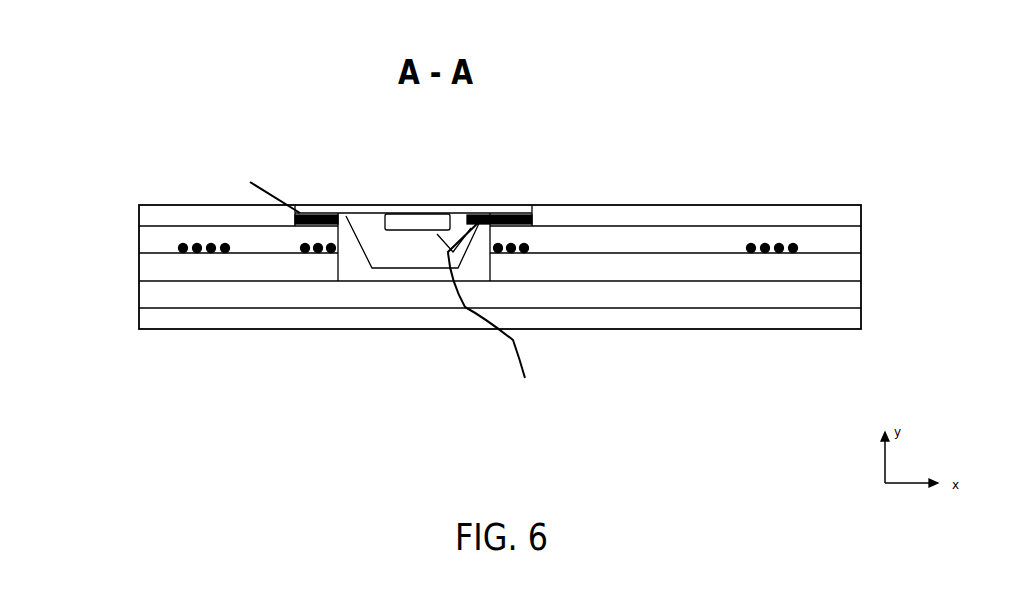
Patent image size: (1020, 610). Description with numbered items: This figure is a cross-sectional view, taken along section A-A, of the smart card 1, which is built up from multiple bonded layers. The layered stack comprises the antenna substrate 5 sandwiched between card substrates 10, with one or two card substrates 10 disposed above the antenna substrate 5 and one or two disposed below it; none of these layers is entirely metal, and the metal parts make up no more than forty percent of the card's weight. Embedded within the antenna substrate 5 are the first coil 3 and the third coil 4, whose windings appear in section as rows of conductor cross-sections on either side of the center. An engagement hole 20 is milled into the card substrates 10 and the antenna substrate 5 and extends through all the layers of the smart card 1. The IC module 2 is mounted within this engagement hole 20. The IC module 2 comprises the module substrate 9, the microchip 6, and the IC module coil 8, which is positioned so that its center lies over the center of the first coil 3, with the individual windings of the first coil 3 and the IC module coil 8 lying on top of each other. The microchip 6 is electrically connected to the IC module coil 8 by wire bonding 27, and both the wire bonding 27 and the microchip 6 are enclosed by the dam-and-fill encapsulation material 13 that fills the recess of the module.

The smart card 1 is at (118, 114).
The IC module 2 is at (534, 217).
The first coil 3 is at (307, 255).
The third coil 4 is at (180, 224).
The antenna substrate 5 is at (848, 270).
The microchip 6 is at (418, 218).
The IC module coil 8 is at (312, 215).
The module substrate 9 is at (357, 213).
The card substrate 10 is at (677, 217).
The dam-and-fill encapsulation material 13 is at (413, 245).
The engagement hole 20 is at (265, 192).
The wire bonding 27 is at (490, 309).